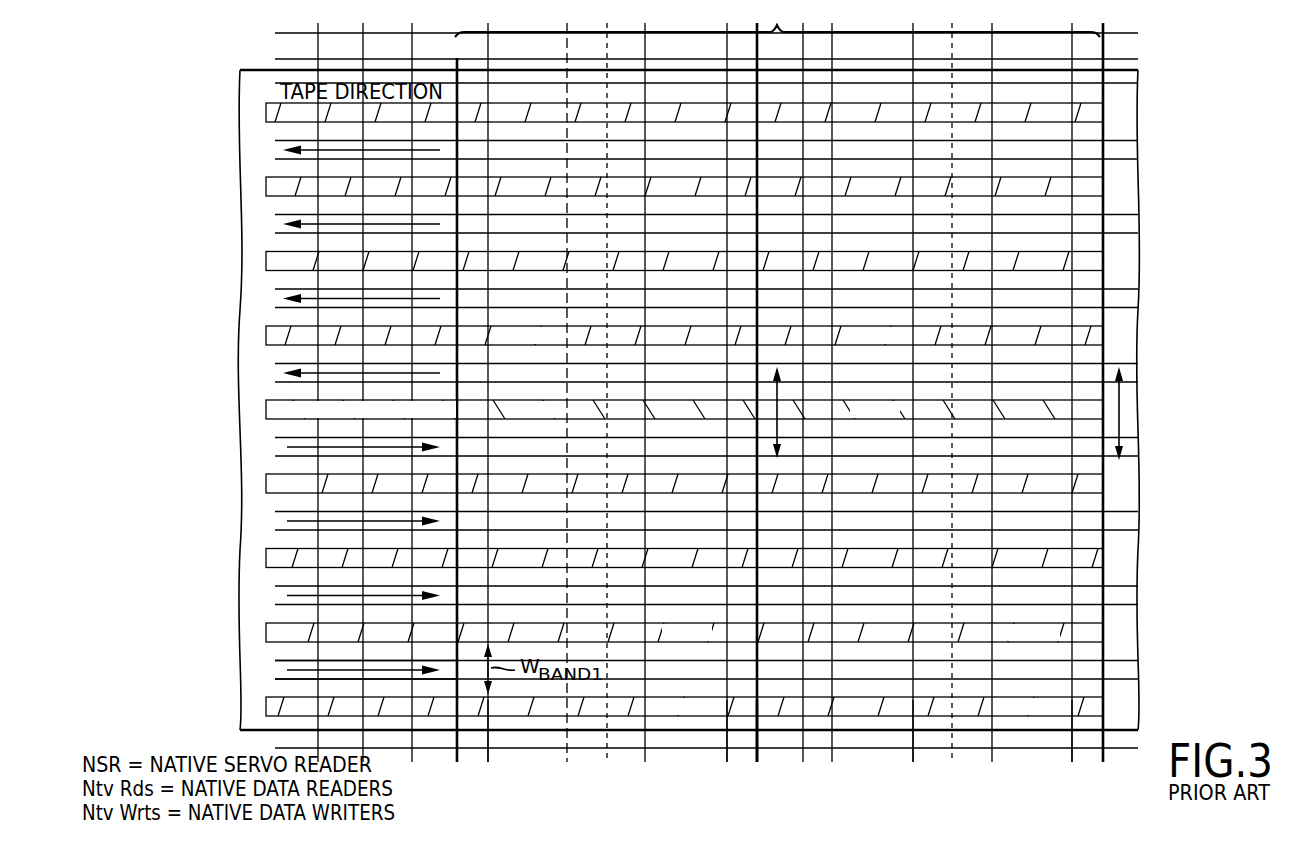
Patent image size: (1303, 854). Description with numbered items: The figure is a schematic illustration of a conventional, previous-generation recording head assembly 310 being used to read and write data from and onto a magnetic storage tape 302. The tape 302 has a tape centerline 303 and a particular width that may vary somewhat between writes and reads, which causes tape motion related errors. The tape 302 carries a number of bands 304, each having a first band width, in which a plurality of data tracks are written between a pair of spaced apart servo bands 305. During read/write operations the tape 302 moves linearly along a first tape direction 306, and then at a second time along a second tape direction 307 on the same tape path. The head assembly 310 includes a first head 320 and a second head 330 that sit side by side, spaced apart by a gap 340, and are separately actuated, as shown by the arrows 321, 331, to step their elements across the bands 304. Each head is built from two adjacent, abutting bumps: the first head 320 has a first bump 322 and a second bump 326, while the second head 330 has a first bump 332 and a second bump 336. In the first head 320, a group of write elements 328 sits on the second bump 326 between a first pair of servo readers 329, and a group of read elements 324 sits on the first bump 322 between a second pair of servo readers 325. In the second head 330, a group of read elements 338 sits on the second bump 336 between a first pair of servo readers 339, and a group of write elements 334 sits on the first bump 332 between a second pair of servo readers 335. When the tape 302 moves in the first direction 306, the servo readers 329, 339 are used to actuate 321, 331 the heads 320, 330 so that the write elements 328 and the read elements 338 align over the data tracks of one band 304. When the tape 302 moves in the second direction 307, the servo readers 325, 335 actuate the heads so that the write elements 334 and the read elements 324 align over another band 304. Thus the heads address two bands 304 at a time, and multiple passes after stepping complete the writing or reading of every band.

The tape 302 is at (280, 68).
The tape centerline 303 is at (287, 397).
The bands 304 is at (300, 650).
The servo bands 305 is at (343, 705).
The first tape direction 306 is at (320, 518).
The second tape direction 307 is at (327, 292).
The recording head assembly 310 is at (777, 30).
The first head 320 is at (624, 759).
The actuation arrows 321 is at (775, 400).
The first bump 322 is at (531, 751).
The read elements 324 is at (566, 351).
The second pair of servo readers 325 is at (593, 342).
The second bump 326 is at (690, 750).
The write elements 328 is at (632, 645).
The first pair of servo readers 329 is at (723, 630).
The second head 330 is at (964, 762).
The actuation arrows 331 is at (1140, 405).
The first bump 332 is at (872, 750).
The write elements 334 is at (906, 343).
The second pair of servo readers 335 is at (937, 340).
The second bump 336 is at (1033, 748).
The read elements 338 is at (986, 645).
The first pair of servo readers 339 is at (1077, 630).
The gap 340 is at (777, 738).